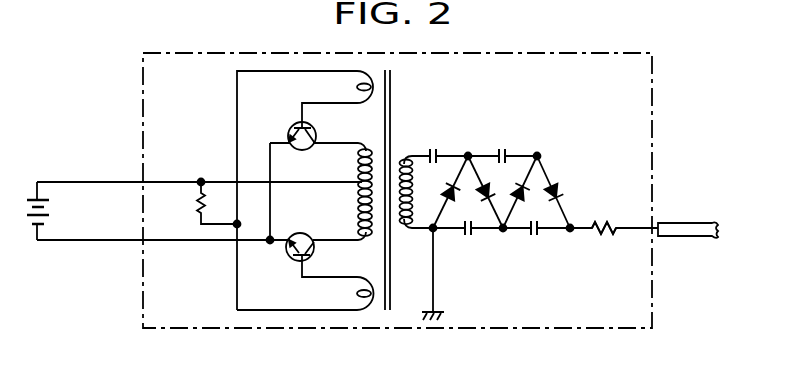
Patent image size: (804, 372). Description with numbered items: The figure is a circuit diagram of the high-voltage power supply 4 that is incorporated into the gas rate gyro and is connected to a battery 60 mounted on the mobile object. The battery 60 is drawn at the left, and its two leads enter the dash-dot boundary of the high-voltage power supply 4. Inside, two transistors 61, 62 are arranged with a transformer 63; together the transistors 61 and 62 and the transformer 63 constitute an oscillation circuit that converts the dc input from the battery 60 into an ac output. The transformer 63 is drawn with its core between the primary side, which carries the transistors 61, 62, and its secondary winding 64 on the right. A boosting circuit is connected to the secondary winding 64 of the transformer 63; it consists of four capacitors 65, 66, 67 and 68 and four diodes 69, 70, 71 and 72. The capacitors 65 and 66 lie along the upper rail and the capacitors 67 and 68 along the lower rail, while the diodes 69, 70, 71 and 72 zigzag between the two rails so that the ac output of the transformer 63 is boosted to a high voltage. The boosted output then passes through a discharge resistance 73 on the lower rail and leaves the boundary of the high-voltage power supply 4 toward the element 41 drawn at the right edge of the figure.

The high-voltage power supply 4 is at (652, 53).
The electrode 41 is at (681, 222).
The battery 60 is at (50, 213).
The transistor 61 is at (290, 127).
The transistor 62 is at (290, 251).
The transformer 63 is at (392, 66).
The secondary winding 64 is at (415, 164).
The capacitor 65 is at (436, 150).
The capacitor 66 is at (502, 149).
The capacitor 67 is at (468, 240).
The capacitor 68 is at (534, 236).
The diode 69 is at (444, 182).
The diode 70 is at (482, 197).
The diode 71 is at (525, 180).
The diode 72 is at (557, 193).
The discharge resistance 73 is at (598, 236).